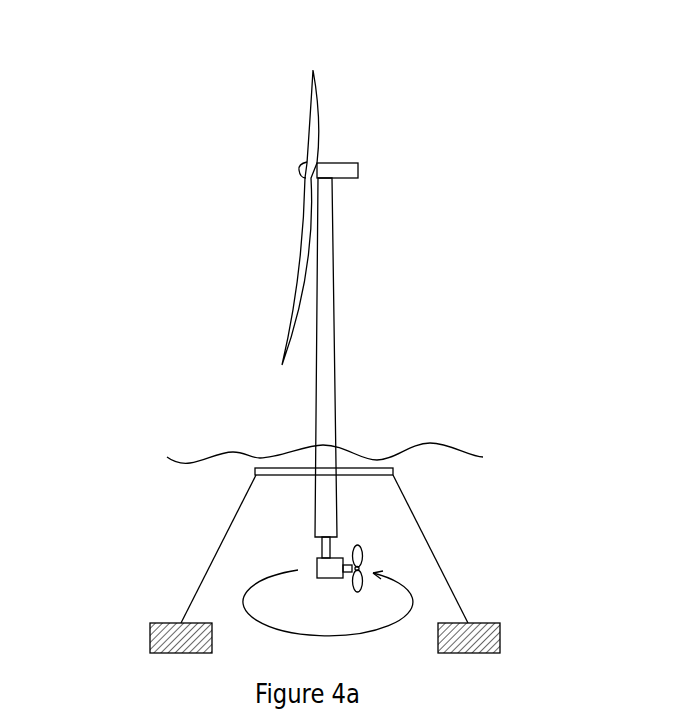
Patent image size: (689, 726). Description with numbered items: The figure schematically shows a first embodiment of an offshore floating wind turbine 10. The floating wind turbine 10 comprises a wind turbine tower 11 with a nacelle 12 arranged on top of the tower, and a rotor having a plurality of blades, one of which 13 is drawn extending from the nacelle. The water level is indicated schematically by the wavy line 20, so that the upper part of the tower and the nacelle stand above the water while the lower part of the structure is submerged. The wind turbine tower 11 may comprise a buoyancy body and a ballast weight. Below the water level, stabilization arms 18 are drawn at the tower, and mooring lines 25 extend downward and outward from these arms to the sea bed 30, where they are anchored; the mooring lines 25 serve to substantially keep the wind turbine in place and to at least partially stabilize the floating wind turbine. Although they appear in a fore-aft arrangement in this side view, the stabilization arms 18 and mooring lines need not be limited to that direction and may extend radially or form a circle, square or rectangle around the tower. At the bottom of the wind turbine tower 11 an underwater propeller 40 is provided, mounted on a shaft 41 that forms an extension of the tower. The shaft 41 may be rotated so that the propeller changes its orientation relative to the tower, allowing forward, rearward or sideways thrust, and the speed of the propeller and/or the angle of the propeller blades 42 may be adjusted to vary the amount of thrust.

The floating wind turbine 10 is at (250, 82).
The wind turbine tower 11 is at (318, 355).
The nacelle 12 is at (346, 163).
The rotor blade 13 is at (307, 197).
The stabilization arms 18 is at (290, 472).
The water level 20 is at (468, 448).
The mooring lines 25 is at (213, 560).
The sea bed 30 is at (170, 625).
The underwater propeller 40 is at (328, 573).
The shaft 41 is at (328, 550).
The propeller blades 42 is at (360, 553).